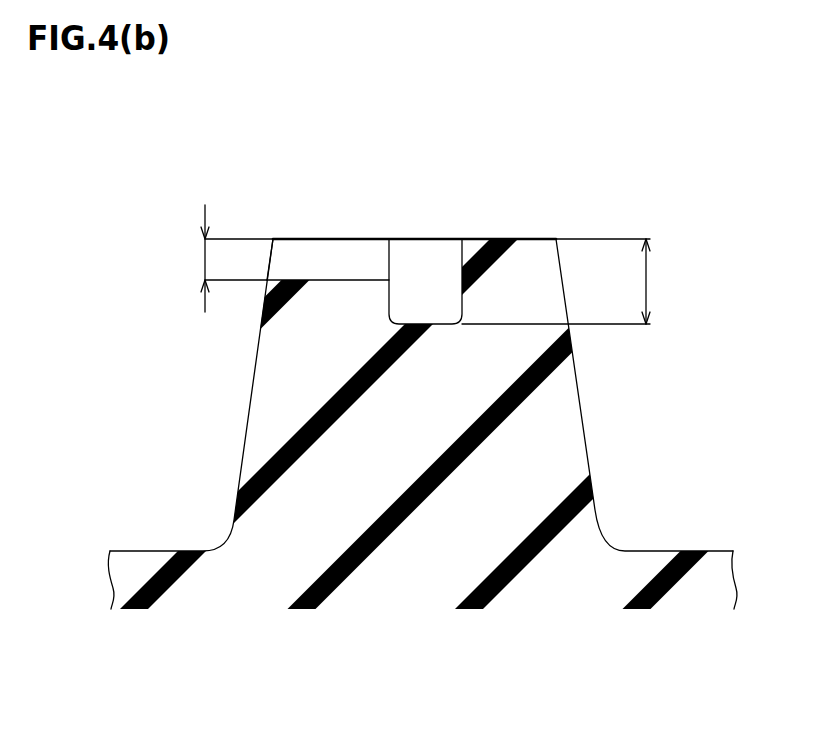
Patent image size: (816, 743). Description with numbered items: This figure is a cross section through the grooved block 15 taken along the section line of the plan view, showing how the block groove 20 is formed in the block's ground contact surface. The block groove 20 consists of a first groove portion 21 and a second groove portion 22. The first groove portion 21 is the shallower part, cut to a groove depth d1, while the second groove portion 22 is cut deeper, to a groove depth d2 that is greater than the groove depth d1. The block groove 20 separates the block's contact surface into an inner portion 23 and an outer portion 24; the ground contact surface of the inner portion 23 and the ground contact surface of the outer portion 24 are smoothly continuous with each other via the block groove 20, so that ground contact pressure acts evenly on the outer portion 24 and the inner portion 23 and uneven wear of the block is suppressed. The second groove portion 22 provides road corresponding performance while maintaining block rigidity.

The grooved block 15 is at (282, 233).
The block groove 20 is at (413, 118).
The first groove portion 21 is at (368, 255).
The second groove portion 22 is at (425, 265).
The inner portion 23 is at (338, 239).
The outer portion 24 is at (513, 239).
The groove depth of the first groove portion d1 is at (220, 258).
The groove depth of the second groove portion d2 is at (571, 281).